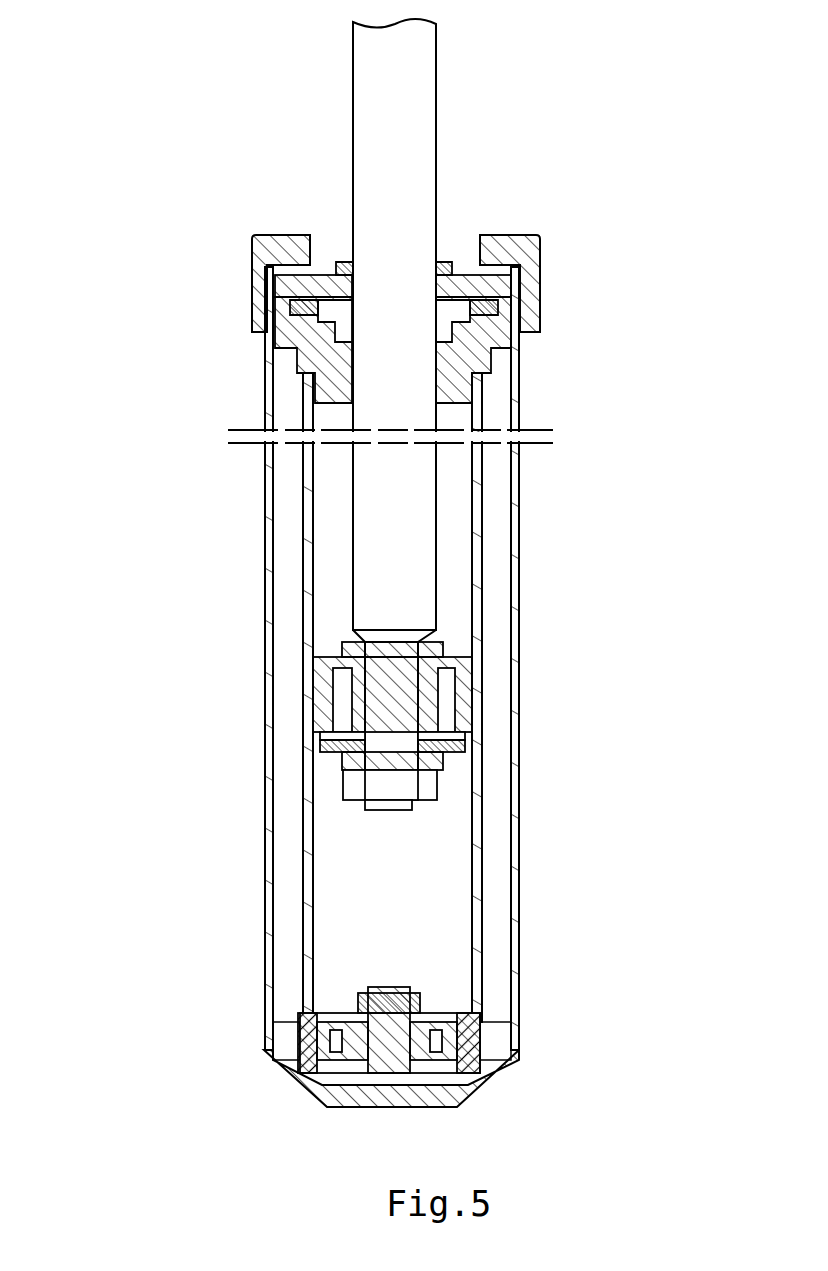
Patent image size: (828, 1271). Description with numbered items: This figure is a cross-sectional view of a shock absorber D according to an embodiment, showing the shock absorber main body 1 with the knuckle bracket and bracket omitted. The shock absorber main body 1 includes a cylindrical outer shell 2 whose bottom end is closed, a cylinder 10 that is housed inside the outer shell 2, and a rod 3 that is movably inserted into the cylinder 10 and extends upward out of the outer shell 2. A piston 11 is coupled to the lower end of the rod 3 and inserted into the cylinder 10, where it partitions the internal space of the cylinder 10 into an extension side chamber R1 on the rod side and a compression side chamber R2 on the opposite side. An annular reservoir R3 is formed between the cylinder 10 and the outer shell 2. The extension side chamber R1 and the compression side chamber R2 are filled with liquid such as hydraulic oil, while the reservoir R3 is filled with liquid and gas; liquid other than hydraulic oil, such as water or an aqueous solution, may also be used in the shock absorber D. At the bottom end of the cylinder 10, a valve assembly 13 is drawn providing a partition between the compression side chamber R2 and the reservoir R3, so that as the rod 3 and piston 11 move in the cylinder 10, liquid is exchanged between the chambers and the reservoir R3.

The shock absorber D is at (214, 125).
The shock absorber main body 1 is at (558, 277).
The outer shell 2 is at (518, 522).
The rod 3 is at (353, 82).
The cylinder 10 is at (477, 863).
The piston 11 is at (470, 707).
The bottom valve 13 is at (513, 1040).
The extension side chamber R1 is at (333, 503).
The compression side chamber R2 is at (365, 893).
The reservoir R3 is at (285, 690).